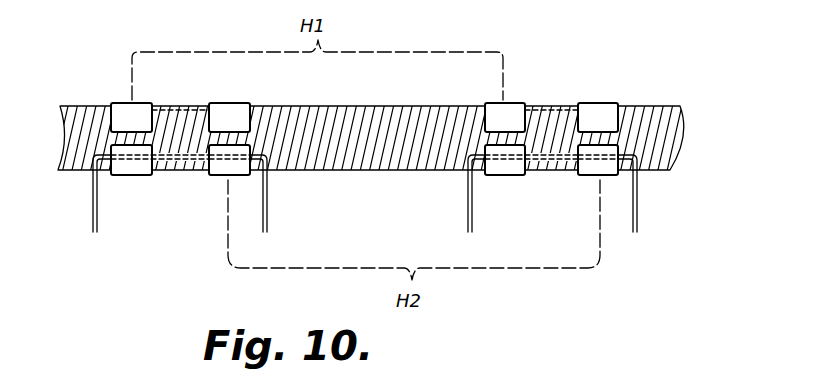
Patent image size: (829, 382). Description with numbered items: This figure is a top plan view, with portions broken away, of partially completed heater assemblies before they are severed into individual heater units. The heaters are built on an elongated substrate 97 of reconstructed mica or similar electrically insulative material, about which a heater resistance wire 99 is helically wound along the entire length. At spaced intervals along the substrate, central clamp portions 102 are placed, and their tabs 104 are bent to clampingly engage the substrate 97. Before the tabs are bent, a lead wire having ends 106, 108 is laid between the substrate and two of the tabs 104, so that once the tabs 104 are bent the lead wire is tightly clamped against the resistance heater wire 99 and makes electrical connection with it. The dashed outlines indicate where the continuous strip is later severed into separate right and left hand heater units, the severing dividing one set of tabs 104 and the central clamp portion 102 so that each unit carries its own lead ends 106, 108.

The elongated substrate 97 is at (686, 131).
The heater resistance wire 99 is at (361, 110).
The central clamp portion 102 is at (190, 109).
The tabs 104 is at (122, 113).
The lead wire end 106 is at (98, 221).
The lead wire end 108 is at (268, 221).